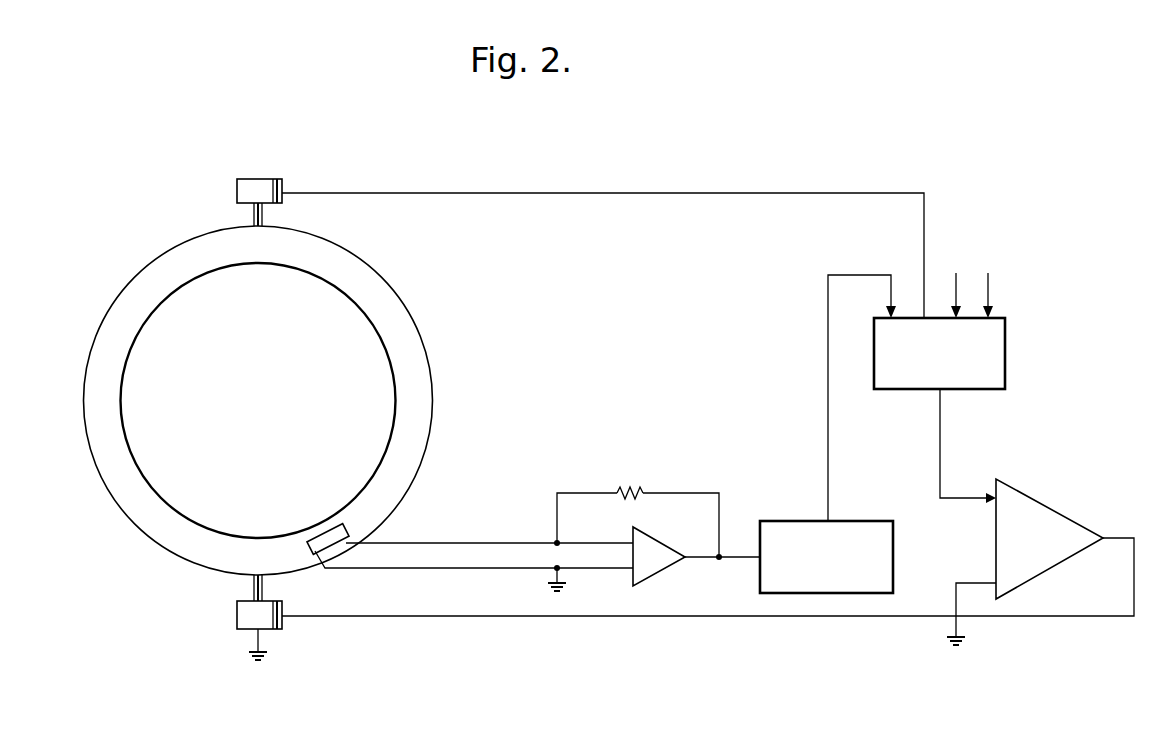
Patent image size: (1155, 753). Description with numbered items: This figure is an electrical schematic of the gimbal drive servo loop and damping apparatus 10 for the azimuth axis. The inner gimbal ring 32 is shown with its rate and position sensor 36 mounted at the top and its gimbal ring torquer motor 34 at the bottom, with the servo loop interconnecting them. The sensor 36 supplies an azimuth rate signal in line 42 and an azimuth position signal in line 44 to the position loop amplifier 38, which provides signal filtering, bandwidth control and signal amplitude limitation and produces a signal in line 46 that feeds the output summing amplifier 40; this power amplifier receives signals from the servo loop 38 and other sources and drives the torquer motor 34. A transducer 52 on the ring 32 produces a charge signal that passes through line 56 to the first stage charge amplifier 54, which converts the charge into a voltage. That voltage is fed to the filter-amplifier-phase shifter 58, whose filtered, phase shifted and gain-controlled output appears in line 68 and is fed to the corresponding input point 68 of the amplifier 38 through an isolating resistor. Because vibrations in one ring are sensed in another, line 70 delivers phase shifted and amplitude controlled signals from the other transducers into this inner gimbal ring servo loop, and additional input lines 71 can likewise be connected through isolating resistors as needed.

The ring assembly 10 is at (456, 312).
The inner gimbal ring 32 is at (132, 455).
The gimbal ring torquer motor 34 is at (240, 617).
The rate and position sensor 36 is at (272, 182).
The position loop amplifier 38 is at (1000, 321).
The output summing amplifier 40 is at (1050, 517).
The azimuth rate signal line 42 is at (723, 193).
The azimuth position signal line 44 is at (603, 233).
The output signal line 46 is at (938, 418).
The transducer 52 is at (323, 530).
The first stage charge amplifier 54 is at (650, 577).
The transducer signal line 56 is at (453, 543).
The filter-amplifier-phase shifter 58 is at (778, 525).
The input point 68 is at (826, 382).
The input line 70 is at (958, 284).
The additional input line 71 is at (990, 289).